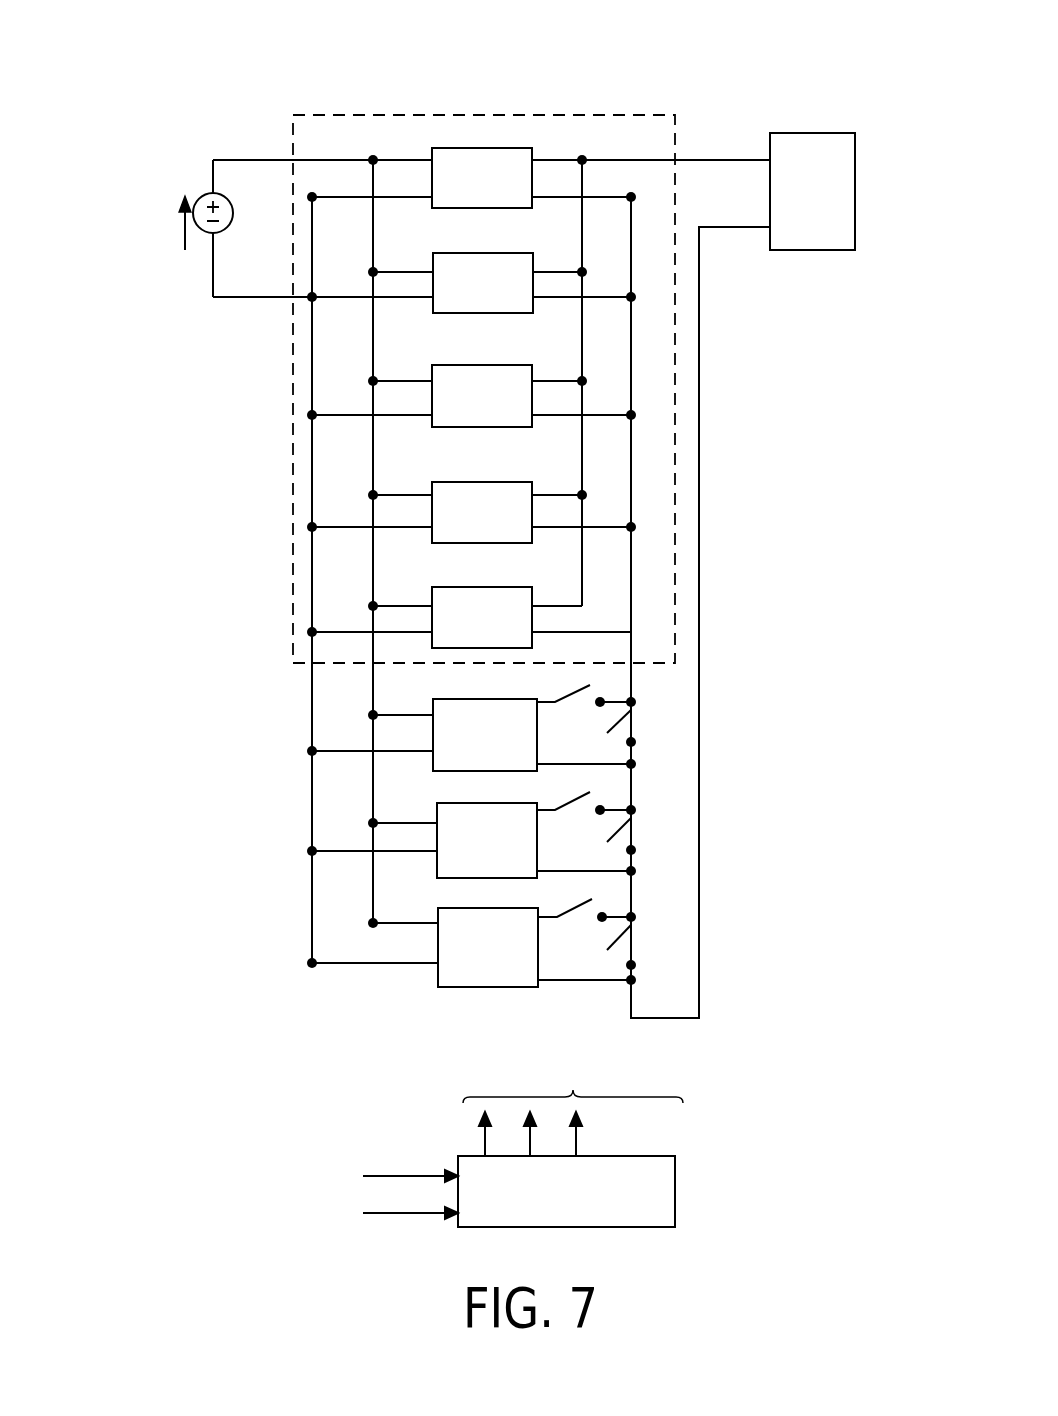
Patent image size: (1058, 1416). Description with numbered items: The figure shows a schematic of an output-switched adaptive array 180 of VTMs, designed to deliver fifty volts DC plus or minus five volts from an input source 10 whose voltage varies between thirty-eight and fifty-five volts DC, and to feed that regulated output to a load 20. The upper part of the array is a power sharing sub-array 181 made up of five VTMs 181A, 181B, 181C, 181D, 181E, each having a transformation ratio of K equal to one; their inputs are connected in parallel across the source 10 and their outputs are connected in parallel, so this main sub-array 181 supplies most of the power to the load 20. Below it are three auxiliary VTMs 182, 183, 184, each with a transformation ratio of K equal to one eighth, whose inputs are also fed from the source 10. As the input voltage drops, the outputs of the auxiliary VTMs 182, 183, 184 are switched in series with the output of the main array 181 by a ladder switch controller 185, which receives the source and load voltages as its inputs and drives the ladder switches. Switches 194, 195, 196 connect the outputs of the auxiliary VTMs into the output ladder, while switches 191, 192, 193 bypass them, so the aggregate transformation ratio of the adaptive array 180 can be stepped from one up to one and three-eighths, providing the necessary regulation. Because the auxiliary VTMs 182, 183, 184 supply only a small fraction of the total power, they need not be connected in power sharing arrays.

The voltage source 10 is at (208, 196).
The load 20 is at (840, 250).
The adaptive array 180 is at (713, 69).
The power sharing sub-array 181 is at (293, 137).
The VTM 181A is at (524, 148).
The VTM 181B is at (524, 253).
The VTM 181C is at (524, 365).
The VTM 181D is at (524, 482).
The VTM 181E is at (524, 587).
The auxiliary VTM 182 is at (527, 699).
The auxiliary VTM 183 is at (527, 803).
The auxiliary VTM 184 is at (527, 908).
The ladder switch controller 185 is at (675, 1168).
The ladder switch 191 is at (646, 728).
The ladder switch 192 is at (648, 836).
The ladder switch 193 is at (649, 947).
The ladder switch 194 is at (586, 710).
The ladder switch 195 is at (586, 817).
The ladder switch 196 is at (587, 925).